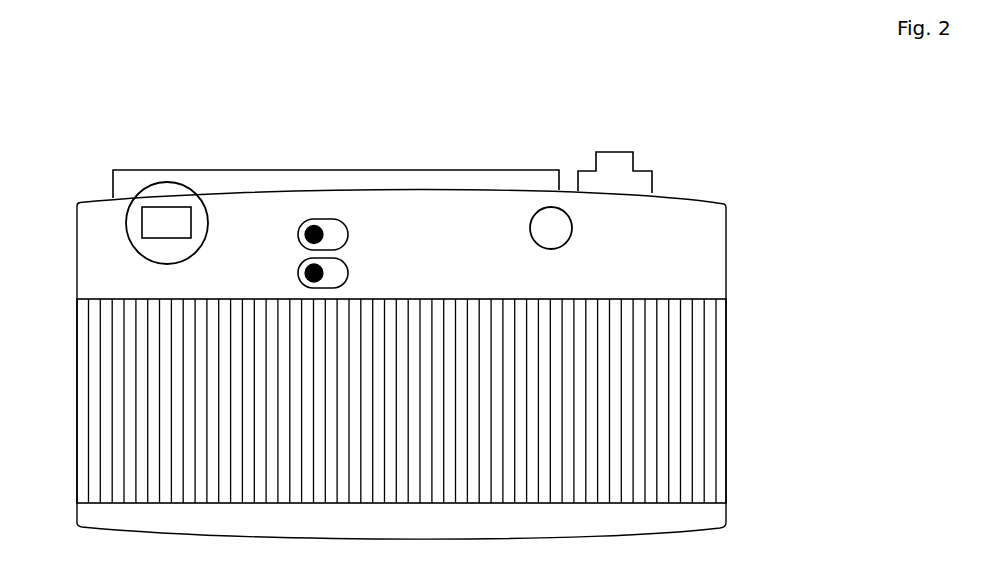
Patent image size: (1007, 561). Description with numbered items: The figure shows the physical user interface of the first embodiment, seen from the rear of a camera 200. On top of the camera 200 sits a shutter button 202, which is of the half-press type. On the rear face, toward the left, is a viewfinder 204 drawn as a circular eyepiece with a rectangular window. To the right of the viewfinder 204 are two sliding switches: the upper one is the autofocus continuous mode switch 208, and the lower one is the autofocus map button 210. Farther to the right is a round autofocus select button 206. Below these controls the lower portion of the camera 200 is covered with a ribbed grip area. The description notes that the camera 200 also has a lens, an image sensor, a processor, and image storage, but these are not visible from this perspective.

The camera 200 is at (708, 263).
The shutter button 202 is at (612, 143).
The viewfinder 204 is at (167, 222).
The autofocus select button 206 is at (529, 213).
The autofocus continuous mode switch 208 is at (308, 215).
The autofocus map button 210 is at (277, 258).